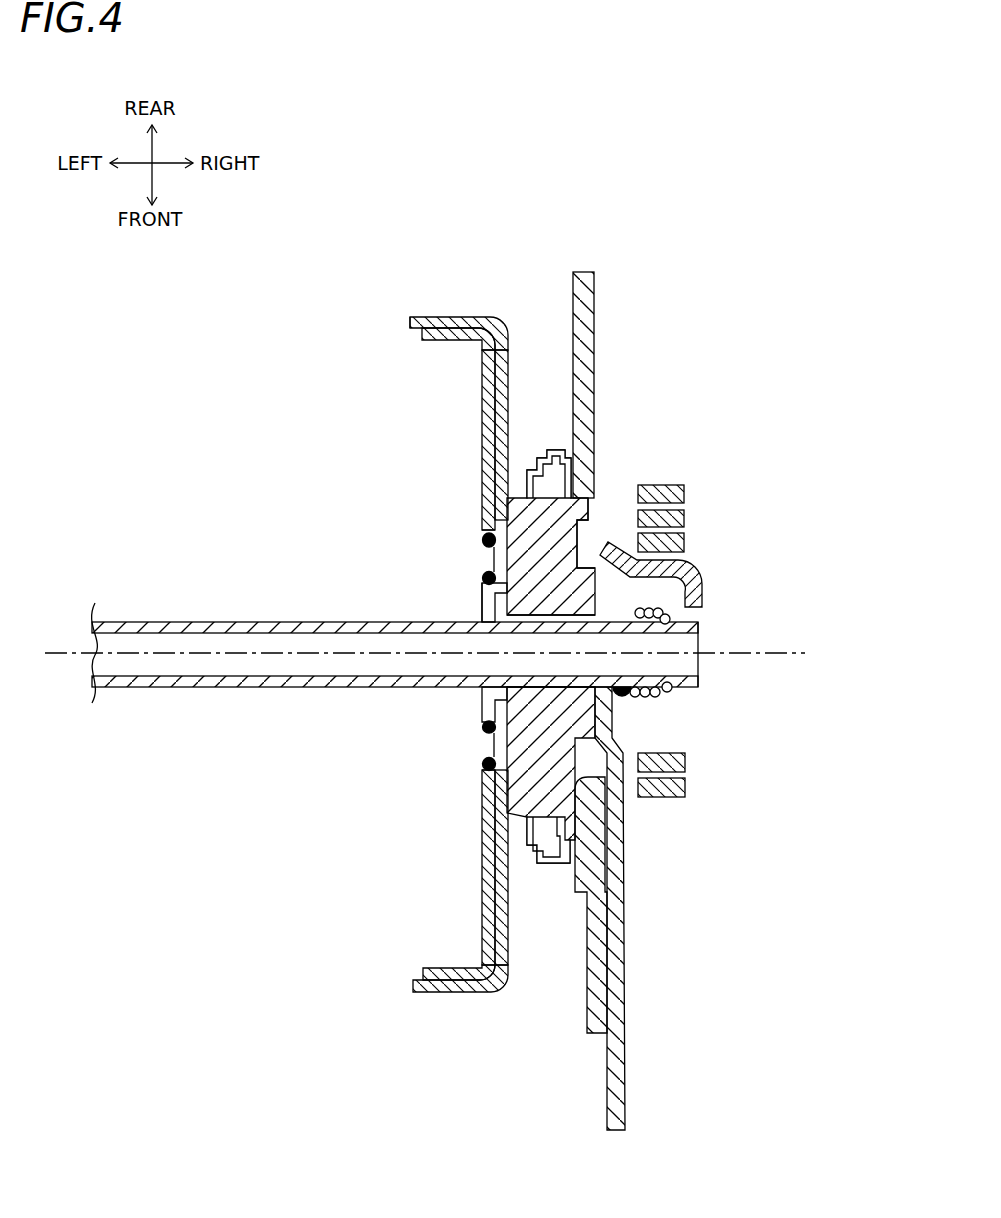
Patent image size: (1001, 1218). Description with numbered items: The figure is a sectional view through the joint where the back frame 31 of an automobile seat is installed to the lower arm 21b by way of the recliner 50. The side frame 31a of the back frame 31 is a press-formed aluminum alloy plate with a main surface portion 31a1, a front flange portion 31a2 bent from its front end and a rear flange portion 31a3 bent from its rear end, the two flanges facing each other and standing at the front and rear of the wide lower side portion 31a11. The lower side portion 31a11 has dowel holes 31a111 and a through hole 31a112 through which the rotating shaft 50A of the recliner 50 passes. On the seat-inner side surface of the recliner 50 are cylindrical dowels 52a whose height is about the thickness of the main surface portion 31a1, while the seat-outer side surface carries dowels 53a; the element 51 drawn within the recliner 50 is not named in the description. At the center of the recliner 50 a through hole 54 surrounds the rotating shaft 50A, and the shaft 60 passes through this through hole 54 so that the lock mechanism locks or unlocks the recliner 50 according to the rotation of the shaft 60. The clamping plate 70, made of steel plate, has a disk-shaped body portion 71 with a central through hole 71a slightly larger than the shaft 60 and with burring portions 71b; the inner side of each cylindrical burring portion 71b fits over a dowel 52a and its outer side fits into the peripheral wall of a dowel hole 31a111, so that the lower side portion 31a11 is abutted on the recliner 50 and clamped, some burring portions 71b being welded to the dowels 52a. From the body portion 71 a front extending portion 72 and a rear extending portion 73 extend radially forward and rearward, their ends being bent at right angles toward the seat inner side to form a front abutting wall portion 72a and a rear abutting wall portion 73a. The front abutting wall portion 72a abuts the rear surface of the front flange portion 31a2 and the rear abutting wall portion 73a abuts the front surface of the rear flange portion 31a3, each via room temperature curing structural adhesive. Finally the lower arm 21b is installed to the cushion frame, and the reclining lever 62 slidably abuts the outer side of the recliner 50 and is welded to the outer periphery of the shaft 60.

The lower arm 21b is at (605, 960).
The back frame 31 is at (486, 653).
The side frame 31a is at (486, 653).
The main surface portion 31a1 is at (508, 367).
The front flange portion 31a2 is at (440, 992).
The rear flange portion 31a3 is at (452, 317).
The lower side portion 31a11 is at (510, 905).
The dowel hole 31a111 is at (482, 528).
The through hole 31a112 is at (490, 627).
The recliner 50 is at (536, 614).
The rotating shaft 50A is at (768, 660).
The bearing 51 is at (537, 467).
The dowel 52a is at (482, 578).
The dowel 53a is at (593, 528).
The through hole 54 is at (527, 622).
The shaft 60 is at (190, 622).
The reclining lever 62 is at (610, 1085).
The clamping plate 70 is at (435, 654).
The body portion 71 is at (437, 567).
The through hole 71a is at (482, 632).
The burring portion 71b is at (482, 541).
The front extending portion 72 is at (438, 881).
The front abutting wall portion 72a is at (438, 957).
The rear extending portion 73 is at (435, 362).
The rear abutting wall portion 73a is at (455, 340).